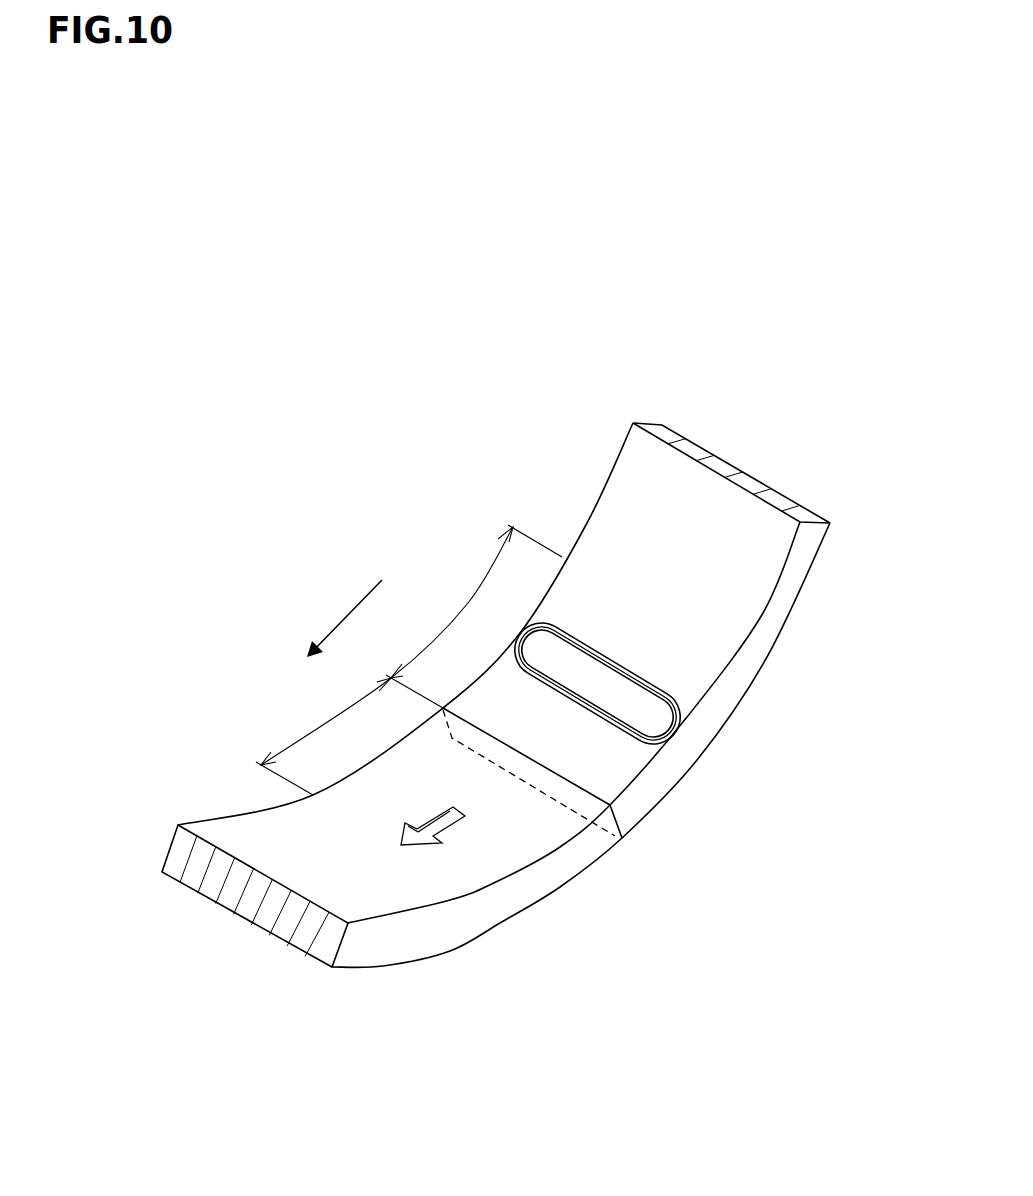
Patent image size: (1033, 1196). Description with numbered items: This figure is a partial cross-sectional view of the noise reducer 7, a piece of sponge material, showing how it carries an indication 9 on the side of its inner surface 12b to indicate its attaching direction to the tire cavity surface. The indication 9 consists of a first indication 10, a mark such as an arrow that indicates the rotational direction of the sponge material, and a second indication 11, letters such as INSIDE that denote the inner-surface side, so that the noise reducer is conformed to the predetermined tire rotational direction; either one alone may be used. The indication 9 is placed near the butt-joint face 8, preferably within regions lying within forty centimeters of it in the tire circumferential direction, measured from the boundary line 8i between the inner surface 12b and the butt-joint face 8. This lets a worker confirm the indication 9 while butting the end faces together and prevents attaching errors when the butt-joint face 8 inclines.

The noise reducer 7 is at (551, 428).
The inner surface 12b is at (692, 512).
The butt-joint face 8 is at (557, 787).
The boundary line 8i is at (550, 768).
The indication 9 is at (825, 847).
The first indication 10 is at (443, 828).
The second indication 11 is at (653, 719).